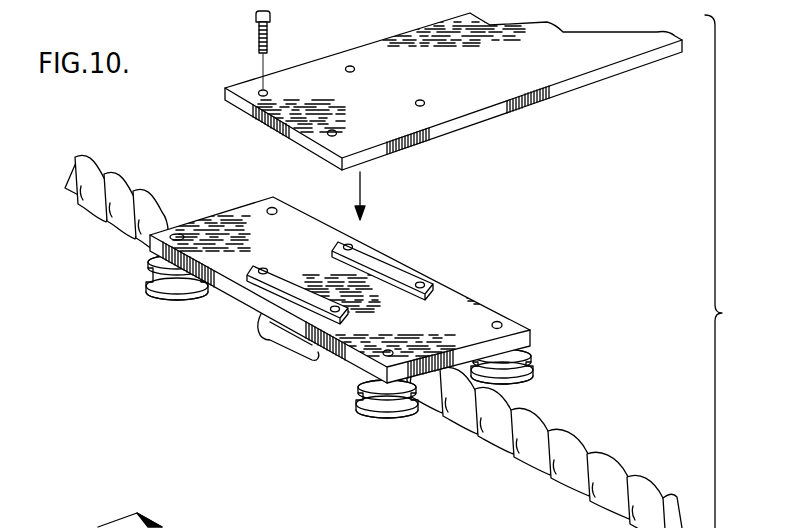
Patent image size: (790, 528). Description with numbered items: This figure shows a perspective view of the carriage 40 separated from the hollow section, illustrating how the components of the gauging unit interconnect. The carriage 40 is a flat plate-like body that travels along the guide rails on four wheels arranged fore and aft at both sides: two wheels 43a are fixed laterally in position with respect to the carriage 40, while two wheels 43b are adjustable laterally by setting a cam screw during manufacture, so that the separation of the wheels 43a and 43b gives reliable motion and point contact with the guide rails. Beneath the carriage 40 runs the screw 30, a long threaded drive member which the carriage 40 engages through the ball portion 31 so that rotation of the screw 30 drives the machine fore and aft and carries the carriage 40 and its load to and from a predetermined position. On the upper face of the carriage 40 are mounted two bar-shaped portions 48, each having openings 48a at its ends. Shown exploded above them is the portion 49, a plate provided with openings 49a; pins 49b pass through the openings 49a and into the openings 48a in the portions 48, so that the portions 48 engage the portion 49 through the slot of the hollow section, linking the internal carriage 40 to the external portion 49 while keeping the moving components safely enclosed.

The screw 30 is at (563, 461).
The ball portion 31 is at (316, 358).
The carriage 40 is at (470, 314).
The wheels 43a is at (397, 404).
The wheels 43b is at (532, 360).
The portions 48 is at (250, 303).
The openings 48a is at (419, 283).
The portion 49 is at (570, 60).
The openings 49a is at (350, 66).
The pins 49b is at (271, 28).